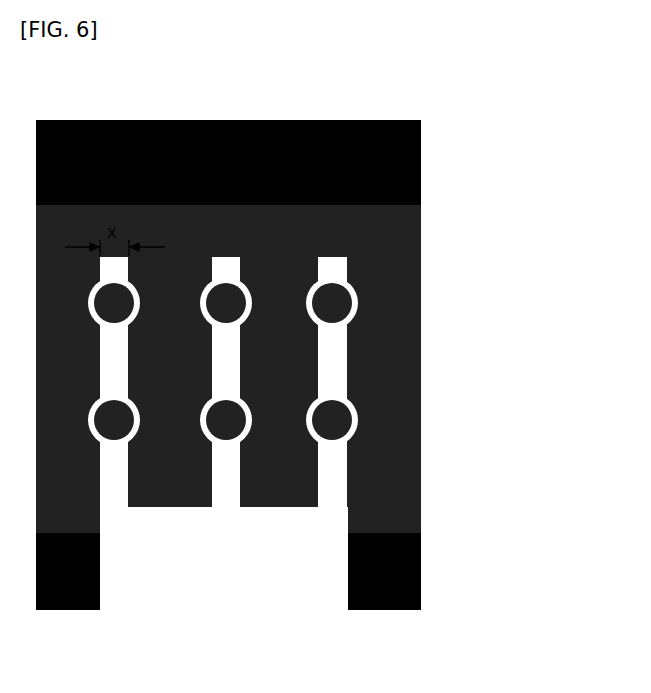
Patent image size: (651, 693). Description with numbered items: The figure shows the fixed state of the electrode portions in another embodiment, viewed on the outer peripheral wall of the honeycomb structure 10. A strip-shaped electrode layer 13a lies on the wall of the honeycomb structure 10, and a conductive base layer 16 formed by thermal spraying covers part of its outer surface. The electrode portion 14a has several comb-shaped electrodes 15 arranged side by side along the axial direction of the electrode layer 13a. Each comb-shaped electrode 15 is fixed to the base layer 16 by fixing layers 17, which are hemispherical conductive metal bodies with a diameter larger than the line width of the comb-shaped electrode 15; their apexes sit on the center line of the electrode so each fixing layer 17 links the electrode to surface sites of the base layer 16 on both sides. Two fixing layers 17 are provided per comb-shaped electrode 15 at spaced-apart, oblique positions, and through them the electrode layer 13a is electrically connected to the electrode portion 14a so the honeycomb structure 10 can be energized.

The honeycomb structure 10 is at (421, 145).
The electrode layer 13a is at (420, 332).
The electrode portion 14a is at (348, 657).
The comb-shaped electrode 15 is at (350, 490).
The base layer 16 is at (362, 415).
The fixing layer 17 is at (331, 392).